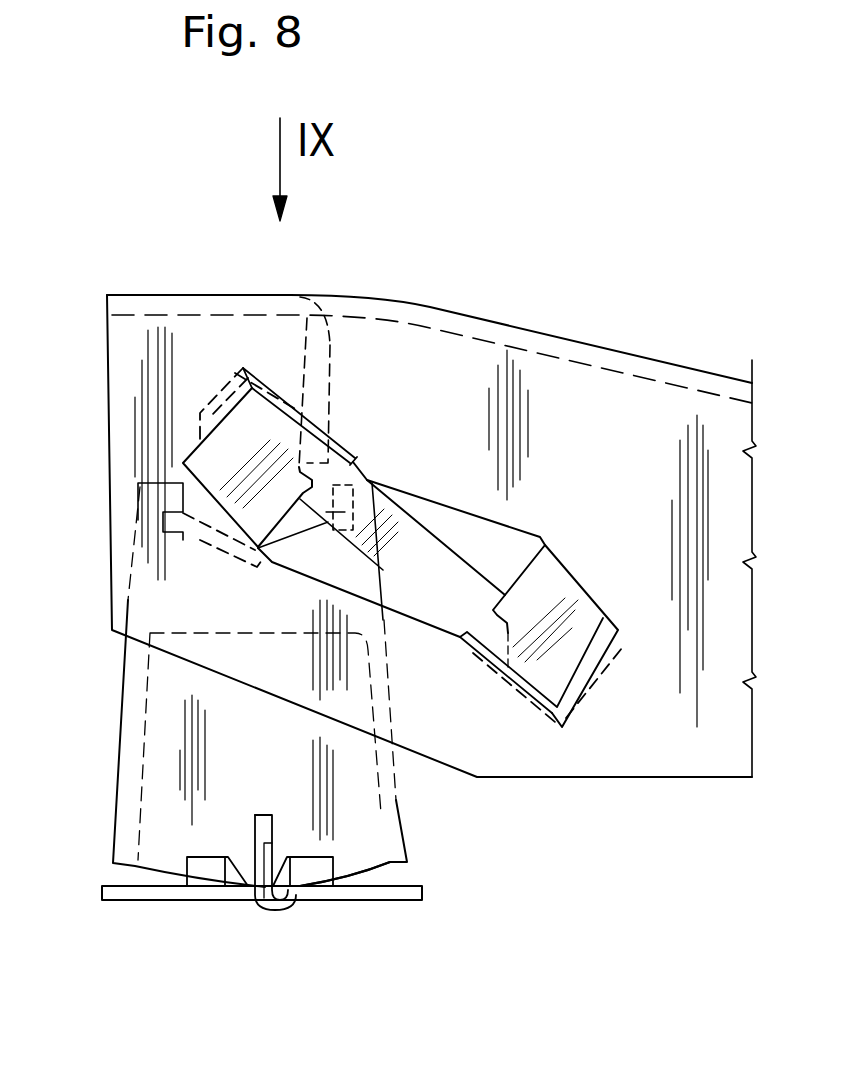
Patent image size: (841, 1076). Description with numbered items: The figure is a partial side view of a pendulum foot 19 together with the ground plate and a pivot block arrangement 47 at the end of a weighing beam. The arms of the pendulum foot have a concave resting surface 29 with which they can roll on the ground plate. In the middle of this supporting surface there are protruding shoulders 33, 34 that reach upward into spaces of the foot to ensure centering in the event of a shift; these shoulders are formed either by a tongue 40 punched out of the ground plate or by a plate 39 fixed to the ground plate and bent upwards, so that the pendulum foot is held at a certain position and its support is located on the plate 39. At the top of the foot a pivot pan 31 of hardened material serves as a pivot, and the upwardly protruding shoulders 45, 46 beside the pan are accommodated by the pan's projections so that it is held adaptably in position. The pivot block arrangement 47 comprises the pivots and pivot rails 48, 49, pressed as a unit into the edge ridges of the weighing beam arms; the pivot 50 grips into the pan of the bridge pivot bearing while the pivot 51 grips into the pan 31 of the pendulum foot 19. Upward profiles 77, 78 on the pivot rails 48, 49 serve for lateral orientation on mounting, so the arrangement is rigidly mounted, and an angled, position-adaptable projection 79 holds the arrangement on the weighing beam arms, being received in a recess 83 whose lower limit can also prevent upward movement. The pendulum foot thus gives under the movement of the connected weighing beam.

The pendulum foot 19 is at (193, 743).
The concave resting surface 29 is at (367, 877).
The pivot pan 31 is at (207, 540).
The protruding shoulder 33 is at (317, 872).
The protruding shoulder 34 is at (212, 866).
The plate 39 is at (143, 890).
The tongue 40 is at (255, 820).
The shoulder 45 is at (152, 520).
The shoulder 46 is at (357, 493).
The pivot block arrangement 47 is at (415, 540).
The pivot rail 48 is at (262, 410).
The pivot rail 49 is at (588, 628).
The pivot 50 is at (548, 543).
The pivot 51 is at (250, 545).
The upward profile 77 is at (243, 370).
The upward profile 78 is at (583, 703).
The angled projection 79 is at (322, 363).
The recess 83 is at (330, 397).